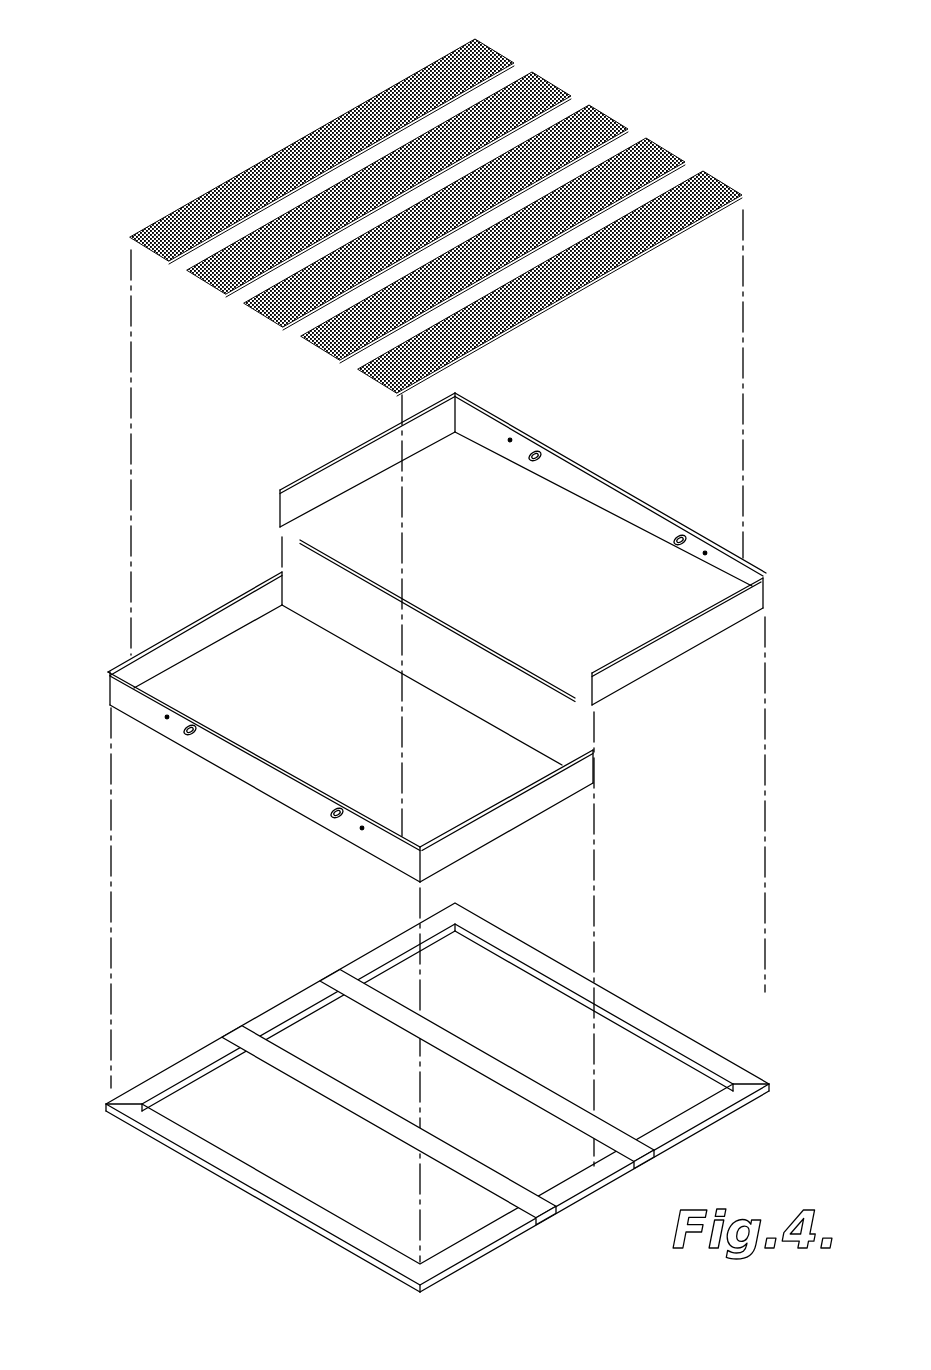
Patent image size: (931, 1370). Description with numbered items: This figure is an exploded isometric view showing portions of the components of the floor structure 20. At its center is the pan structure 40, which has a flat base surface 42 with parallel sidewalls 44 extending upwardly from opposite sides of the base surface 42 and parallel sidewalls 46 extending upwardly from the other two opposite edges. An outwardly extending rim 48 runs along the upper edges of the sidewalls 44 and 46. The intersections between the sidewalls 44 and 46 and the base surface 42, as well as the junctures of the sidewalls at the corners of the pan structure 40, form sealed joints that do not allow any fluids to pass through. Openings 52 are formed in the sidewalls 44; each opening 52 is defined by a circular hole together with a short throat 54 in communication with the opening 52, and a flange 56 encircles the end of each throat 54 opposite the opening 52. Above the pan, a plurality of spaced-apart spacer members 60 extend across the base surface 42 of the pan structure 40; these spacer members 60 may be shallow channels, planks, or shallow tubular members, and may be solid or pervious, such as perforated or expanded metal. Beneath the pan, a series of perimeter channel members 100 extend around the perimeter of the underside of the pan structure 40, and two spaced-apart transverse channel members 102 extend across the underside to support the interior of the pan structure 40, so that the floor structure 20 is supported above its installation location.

The floor structure 20 is at (90, 754).
The pan structure 40 is at (451, 643).
The base surface 42 is at (497, 565).
The sidewalls 44 is at (596, 492).
The sidewalls 46 is at (200, 627).
The rim 48 is at (752, 562).
The openings 52 is at (531, 449).
The throat 54 is at (347, 822).
The flange 56 is at (330, 813).
The spacer members 60 is at (488, 50).
The perimeter channel members 100 is at (633, 993).
The transverse channel members 102 is at (485, 1058).